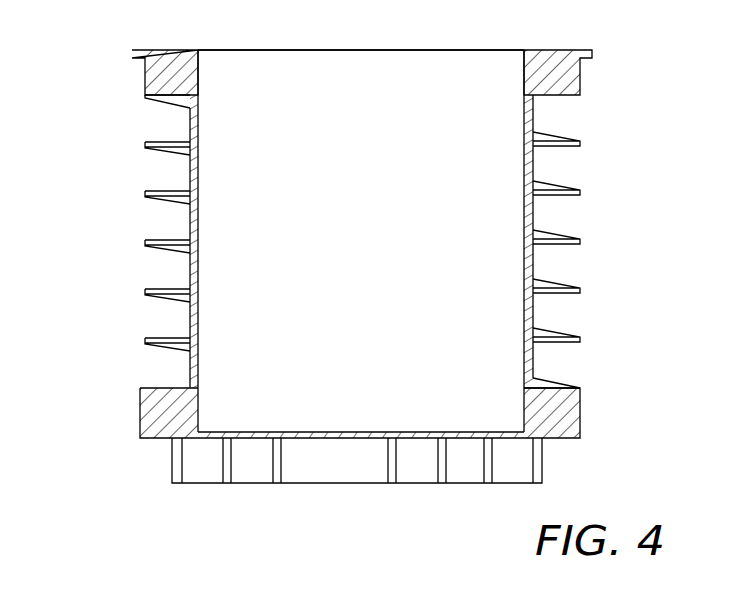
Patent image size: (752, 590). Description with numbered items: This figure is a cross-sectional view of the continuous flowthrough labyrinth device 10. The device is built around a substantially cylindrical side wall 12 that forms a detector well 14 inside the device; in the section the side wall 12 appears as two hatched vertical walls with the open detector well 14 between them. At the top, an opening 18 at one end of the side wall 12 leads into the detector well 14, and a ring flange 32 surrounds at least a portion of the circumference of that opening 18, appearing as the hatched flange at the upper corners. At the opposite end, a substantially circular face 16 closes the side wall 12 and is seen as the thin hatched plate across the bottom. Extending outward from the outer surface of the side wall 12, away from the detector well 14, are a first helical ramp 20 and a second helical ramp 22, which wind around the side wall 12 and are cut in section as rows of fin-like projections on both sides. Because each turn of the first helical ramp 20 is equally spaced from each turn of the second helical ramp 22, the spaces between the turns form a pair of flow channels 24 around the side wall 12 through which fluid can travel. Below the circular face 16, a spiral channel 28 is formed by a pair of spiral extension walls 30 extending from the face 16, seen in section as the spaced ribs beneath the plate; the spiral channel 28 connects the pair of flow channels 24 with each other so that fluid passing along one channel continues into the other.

The continuous flowthrough labyrinth device 10 is at (608, 102).
The substantially cylindrical side wall 12 is at (522, 222).
The detector well 14 is at (354, 130).
The substantially circular face 16 is at (313, 432).
The opening 18 is at (270, 75).
The first helical ramp 20 is at (582, 240).
The second helical ramp 22 is at (148, 146).
The flow channels 24 is at (155, 123).
The spiral channel 28 is at (470, 460).
The spiral extension walls 30 is at (272, 483).
The ring flange 32 is at (566, 50).